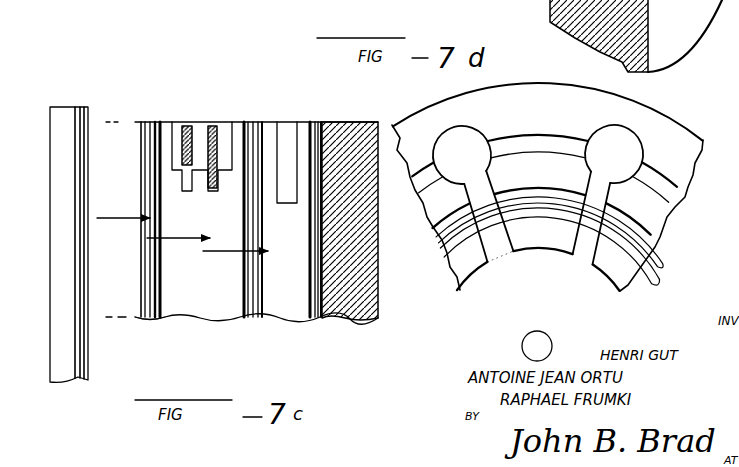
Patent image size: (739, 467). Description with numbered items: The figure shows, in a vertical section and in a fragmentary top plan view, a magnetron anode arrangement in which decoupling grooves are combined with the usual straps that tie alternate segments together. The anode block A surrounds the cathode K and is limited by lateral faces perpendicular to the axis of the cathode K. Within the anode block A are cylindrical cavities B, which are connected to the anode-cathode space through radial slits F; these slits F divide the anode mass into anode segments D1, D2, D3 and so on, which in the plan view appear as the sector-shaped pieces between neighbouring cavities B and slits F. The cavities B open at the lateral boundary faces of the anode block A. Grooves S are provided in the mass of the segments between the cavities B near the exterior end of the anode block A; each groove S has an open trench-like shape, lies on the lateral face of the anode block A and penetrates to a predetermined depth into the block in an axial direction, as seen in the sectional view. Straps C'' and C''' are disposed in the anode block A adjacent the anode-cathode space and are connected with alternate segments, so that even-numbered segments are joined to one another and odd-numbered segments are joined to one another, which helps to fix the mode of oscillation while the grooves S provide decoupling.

In FIG. 7C, the cathode K is at (66, 112).
In FIG. 7D, the cathode K is at (552, 340).
In FIG. 7C, the anode segment D3 is at (252, 124).
In FIG. 7D, the anode segment D3 is at (478, 300).
In FIG. 7D, the anode segment D2 is at (533, 272).
In FIG. 7D, the anode segment D1 is at (612, 283).
In FIG. 7C, the strap C'' is at (183, 128).
In FIG. 7D, the strap C'' is at (565, 260).
In FIG. 7C, the strap C''' is at (226, 118).
In FIG. 7D, the strap C''' is at (572, 234).
In FIG. 7C, the groove S is at (283, 142).
In FIG. 7D, the groove S is at (530, 147).
In FIG. 7C, the anode block A is at (363, 272).
In FIG. 7D, the anode block A is at (660, 122).
In FIG. 7C, the cylindrical cavity B is at (298, 304).
In FIG. 7D, the cylindrical cavity B is at (462, 136).
In FIG. 7C, the radial slit F is at (182, 230).
In FIG. 7D, the radial slit F is at (500, 248).